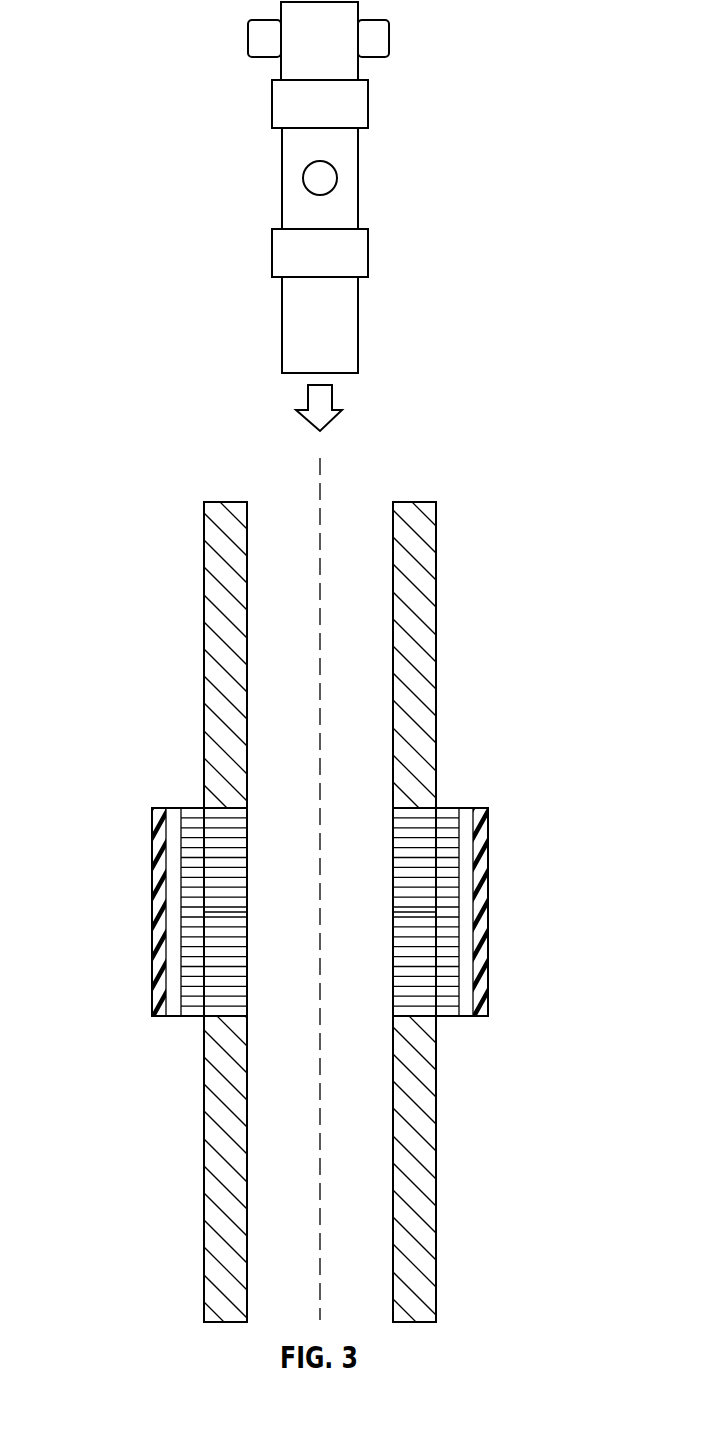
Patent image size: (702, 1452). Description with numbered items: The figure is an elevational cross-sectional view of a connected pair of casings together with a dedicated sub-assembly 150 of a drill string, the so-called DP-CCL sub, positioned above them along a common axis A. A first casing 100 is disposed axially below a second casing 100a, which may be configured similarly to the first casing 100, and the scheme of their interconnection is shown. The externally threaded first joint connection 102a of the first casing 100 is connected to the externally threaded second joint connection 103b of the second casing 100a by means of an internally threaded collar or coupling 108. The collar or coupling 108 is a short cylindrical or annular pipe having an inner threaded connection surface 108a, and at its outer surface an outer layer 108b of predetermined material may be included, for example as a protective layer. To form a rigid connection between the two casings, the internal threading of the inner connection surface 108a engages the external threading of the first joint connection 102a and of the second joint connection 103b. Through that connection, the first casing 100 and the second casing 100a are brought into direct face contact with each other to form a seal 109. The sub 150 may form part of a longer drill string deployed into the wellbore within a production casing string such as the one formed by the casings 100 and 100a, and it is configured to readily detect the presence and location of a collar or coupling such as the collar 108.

The dedicated sub-assembly 150 is at (380, 191).
The longitudinal axis A is at (318, 486).
The second casing 100a is at (119, 406).
The first casing 100 is at (143, 1255).
The first joint connection 102a is at (418, 998).
The second joint connection 103b is at (411, 826).
The collar or coupling 108 is at (490, 826).
The inner threaded connection surface 108a is at (447, 825).
The outer layer 108b is at (482, 917).
The seal 109 is at (413, 913).